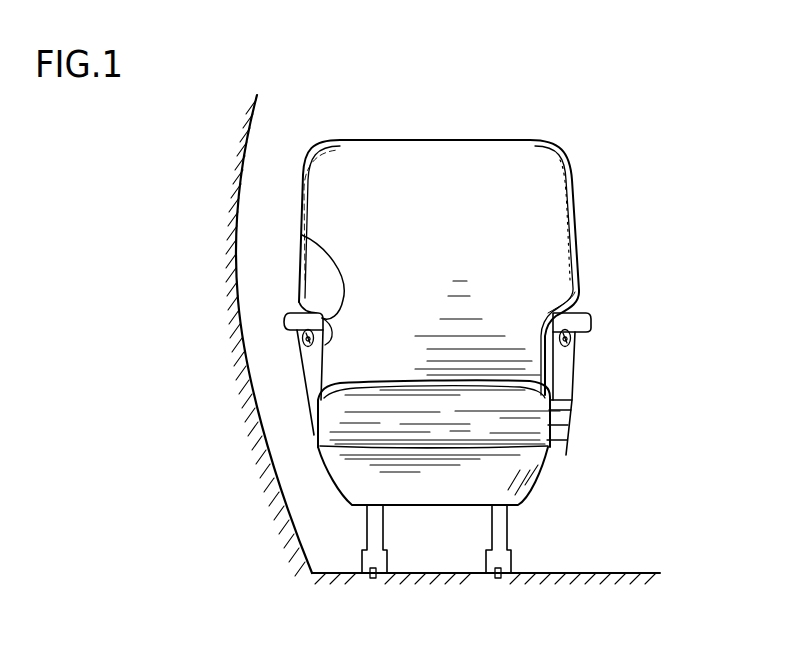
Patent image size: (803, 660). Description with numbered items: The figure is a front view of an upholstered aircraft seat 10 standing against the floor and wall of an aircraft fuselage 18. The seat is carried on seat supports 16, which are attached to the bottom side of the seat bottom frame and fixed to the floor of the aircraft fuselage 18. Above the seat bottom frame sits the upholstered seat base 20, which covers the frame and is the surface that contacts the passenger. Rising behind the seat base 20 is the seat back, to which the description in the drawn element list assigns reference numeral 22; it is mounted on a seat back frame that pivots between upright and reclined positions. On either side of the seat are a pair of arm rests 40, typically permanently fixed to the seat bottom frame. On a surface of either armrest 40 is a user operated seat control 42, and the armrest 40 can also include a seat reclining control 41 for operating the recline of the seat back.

The aircraft seat 10 is at (617, 138).
The seat supports 16 is at (384, 532).
The aircraft fuselage 18 is at (236, 352).
The seat base 20 is at (565, 424).
The seat back 22 is at (353, 162).
The arm rests 40 is at (290, 313).
The seat reclining control 41 is at (318, 247).
The user operated seat control 42 is at (304, 341).